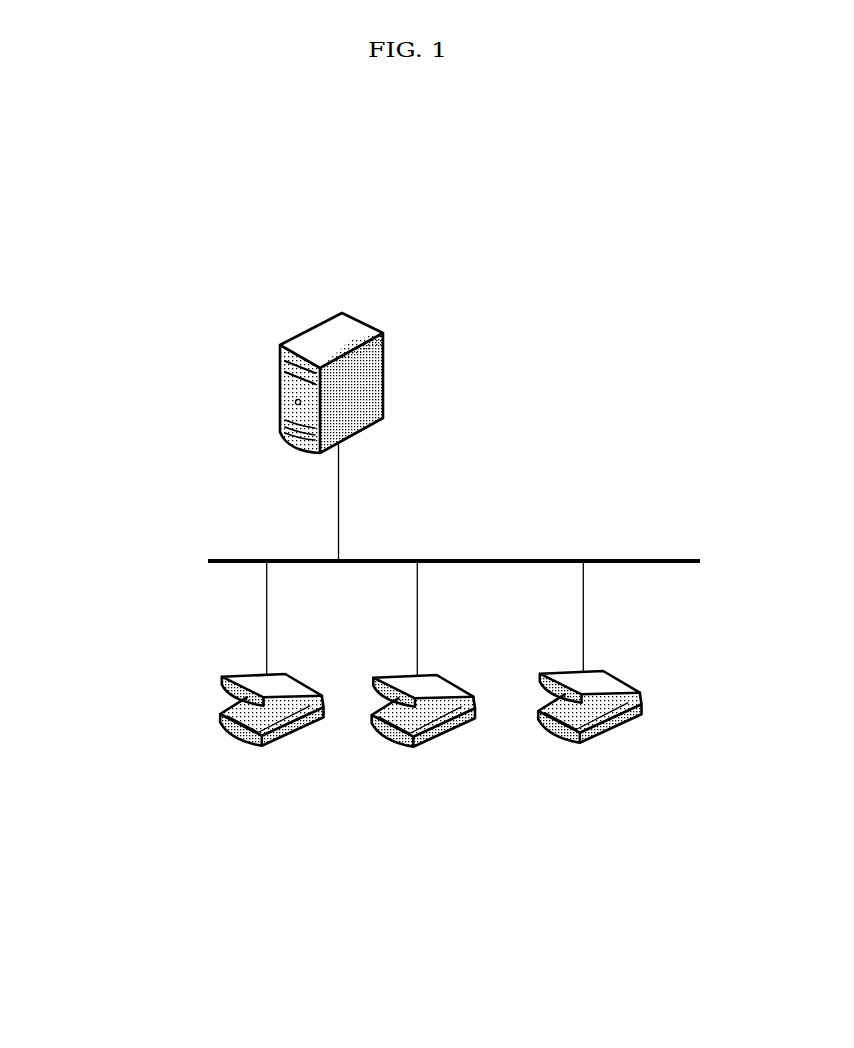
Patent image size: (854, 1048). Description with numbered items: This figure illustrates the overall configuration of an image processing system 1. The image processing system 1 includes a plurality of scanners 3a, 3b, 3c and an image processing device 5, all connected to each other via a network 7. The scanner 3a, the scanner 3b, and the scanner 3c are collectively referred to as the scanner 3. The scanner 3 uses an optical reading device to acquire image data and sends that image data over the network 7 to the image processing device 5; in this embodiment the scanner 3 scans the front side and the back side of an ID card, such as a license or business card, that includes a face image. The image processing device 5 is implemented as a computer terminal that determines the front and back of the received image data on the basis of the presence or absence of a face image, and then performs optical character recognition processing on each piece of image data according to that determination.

The image processing system 1 is at (399, 515).
The image processing device 5 is at (332, 316).
The network 7 is at (650, 563).
The scanner 3 is at (735, 827).
The scanner 3a is at (318, 768).
The scanner 3b is at (470, 769).
The scanner 3c is at (606, 737).